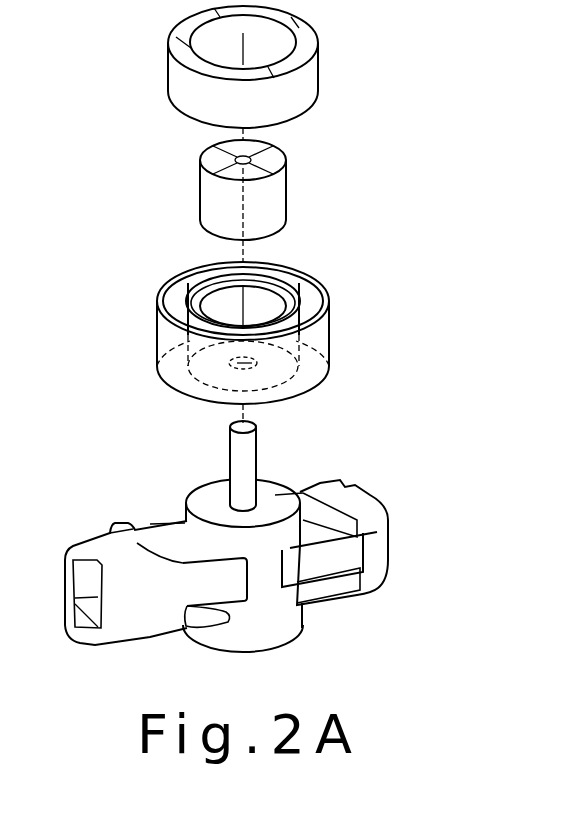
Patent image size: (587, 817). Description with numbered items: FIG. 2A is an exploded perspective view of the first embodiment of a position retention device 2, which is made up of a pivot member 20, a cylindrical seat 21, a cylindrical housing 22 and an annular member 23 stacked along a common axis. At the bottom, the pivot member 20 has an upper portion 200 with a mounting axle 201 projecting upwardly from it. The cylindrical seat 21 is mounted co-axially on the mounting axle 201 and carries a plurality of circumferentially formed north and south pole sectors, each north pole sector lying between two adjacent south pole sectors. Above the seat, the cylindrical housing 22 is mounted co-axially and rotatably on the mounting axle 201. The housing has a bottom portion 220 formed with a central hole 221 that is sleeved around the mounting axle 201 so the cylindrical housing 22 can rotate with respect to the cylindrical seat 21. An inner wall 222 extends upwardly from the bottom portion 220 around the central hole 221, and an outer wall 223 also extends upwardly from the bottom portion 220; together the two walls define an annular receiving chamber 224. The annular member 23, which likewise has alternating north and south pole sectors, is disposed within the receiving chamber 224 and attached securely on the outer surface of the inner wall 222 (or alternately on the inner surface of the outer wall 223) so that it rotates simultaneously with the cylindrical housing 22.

The position retention device 2 is at (462, 135).
The pivot member 20 is at (263, 615).
The upper portion 200 is at (357, 522).
The mounting axle 201 is at (245, 463).
The cylindrical seat 21 is at (273, 208).
The cylindrical housing 22 is at (307, 355).
The bottom portion 220 is at (173, 358).
The central hole 221 is at (283, 372).
The inner wall 222 is at (197, 290).
The outer wall 223 is at (300, 280).
The annular receiving chamber 224 is at (307, 302).
The annular member 23 is at (307, 80).